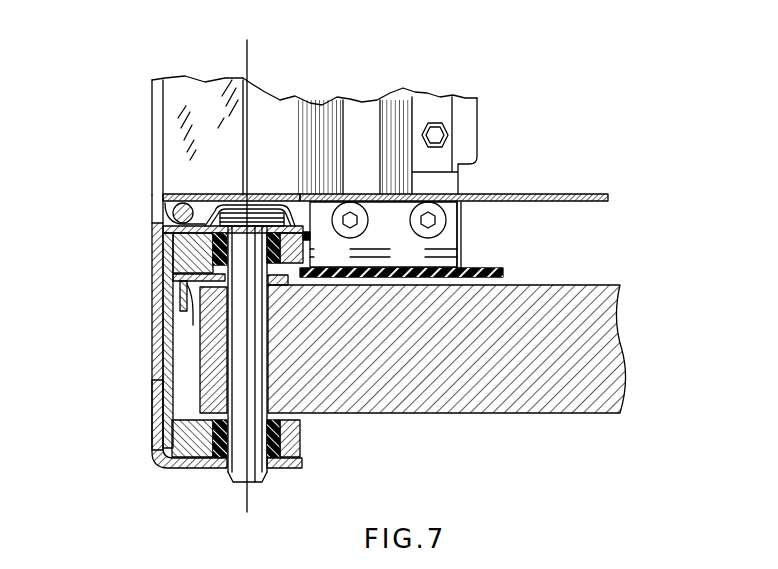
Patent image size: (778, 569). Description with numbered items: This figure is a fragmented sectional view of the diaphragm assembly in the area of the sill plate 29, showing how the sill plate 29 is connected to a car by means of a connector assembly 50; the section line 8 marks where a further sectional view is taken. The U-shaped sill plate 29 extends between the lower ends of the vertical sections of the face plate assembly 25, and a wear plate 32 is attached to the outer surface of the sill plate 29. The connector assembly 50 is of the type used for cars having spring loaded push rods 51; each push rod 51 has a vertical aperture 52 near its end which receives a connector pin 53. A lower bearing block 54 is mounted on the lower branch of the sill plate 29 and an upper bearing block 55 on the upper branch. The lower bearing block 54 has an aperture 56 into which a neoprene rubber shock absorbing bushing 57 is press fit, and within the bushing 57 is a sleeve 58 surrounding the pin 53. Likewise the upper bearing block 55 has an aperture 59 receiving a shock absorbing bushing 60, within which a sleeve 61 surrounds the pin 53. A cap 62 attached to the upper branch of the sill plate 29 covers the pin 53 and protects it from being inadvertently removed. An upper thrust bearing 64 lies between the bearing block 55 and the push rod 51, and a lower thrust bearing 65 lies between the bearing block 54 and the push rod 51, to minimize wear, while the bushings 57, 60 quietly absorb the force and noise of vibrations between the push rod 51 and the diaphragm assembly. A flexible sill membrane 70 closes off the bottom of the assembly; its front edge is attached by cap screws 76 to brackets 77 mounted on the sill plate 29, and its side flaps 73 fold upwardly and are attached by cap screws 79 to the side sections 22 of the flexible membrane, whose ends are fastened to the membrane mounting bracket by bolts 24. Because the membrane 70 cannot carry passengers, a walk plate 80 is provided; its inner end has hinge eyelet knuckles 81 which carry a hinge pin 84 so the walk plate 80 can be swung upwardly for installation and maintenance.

The section line 8- 8 is at (284, 48).
The side sections 22 is at (318, 117).
The bolts 24 is at (446, 124).
The face plate assembly 25 is at (178, 110).
The sill plate 29 is at (152, 217).
The wear plate 32 is at (152, 413).
The connector assembly 50 is at (307, 193).
The push rod 51 is at (603, 290).
The vertical aperture 52 is at (205, 370).
The connector pin 53 is at (240, 323).
The lower bearing block 54 is at (172, 463).
The upper bearing block 55 is at (183, 252).
The aperture 56 is at (195, 463).
The shock absorbing bushing 57 is at (293, 447).
The sleeve 58 is at (272, 479).
The aperture 59 is at (300, 253).
The shock absorbing bushing 60 is at (302, 194).
The sleeve 61 is at (277, 195).
The cap 62 is at (208, 195).
The upper thrust bearing 64 is at (365, 266).
The lower thrust bearing 65 is at (290, 415).
The sill membrane 70 is at (511, 268).
The side flaps 73 is at (450, 237).
The cap screws 76 is at (183, 300).
The brackets 77 is at (175, 278).
The cap screws 79 is at (456, 212).
The walk plate 80 is at (575, 193).
The hinge eyelet knuckles 81 is at (152, 187).
The hinge pin 84 is at (152, 210).